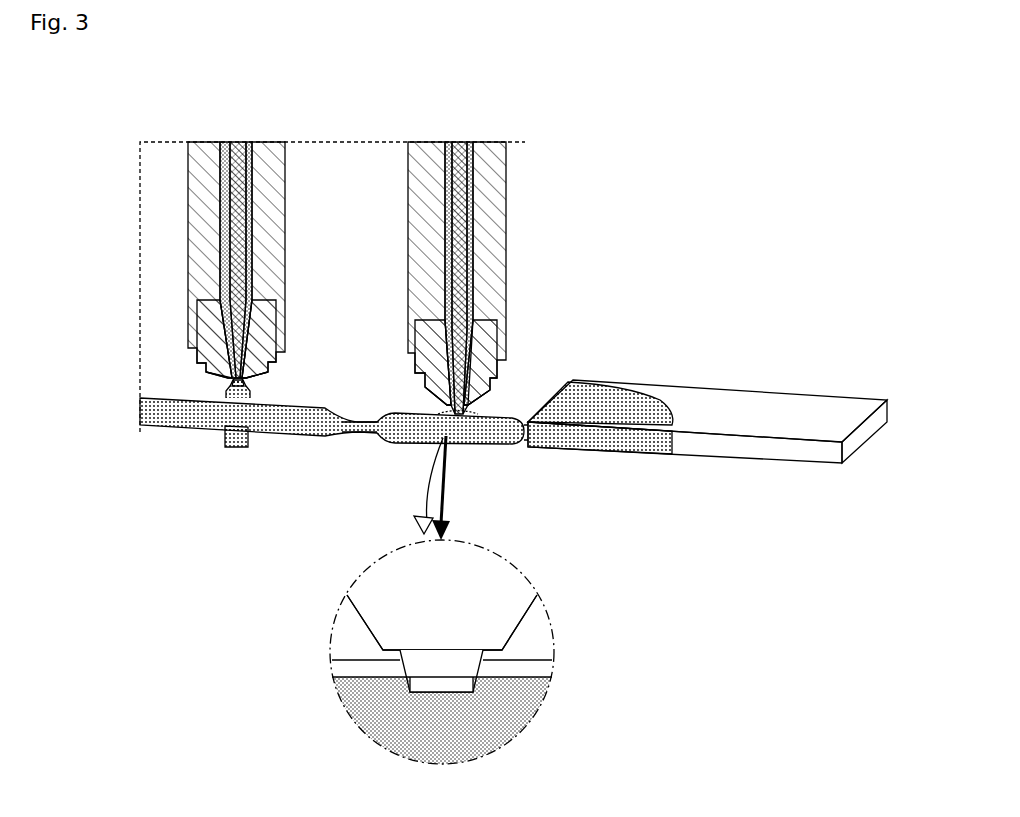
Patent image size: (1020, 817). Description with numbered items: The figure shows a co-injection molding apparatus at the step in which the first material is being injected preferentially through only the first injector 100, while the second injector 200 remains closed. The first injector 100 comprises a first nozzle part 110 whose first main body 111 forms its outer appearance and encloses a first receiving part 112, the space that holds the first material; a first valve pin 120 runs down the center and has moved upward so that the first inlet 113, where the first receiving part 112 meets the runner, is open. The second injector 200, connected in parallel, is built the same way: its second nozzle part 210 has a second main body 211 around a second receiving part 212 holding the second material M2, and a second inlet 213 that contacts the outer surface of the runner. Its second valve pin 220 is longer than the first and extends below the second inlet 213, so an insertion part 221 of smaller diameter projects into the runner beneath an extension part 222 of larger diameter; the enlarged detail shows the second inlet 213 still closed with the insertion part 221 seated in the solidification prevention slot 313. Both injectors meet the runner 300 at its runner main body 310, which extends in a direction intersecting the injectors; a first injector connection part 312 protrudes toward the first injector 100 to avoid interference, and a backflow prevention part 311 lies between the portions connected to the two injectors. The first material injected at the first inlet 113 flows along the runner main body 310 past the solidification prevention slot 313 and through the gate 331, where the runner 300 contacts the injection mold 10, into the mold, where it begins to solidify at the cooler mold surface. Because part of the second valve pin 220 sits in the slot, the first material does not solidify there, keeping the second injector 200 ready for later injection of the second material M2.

The first injector 100 is at (203, 143).
The second injector 200 is at (425, 143).
The first nozzle part 110 is at (88, 247).
The first main body 111 is at (194, 257).
The first receiving part 112 is at (208, 297).
The first inlet 113 is at (224, 388).
The first valve pin 120 is at (232, 223).
The second material M2 is at (468, 192).
The second nozzle part 210 is at (610, 248).
The second main body 211 is at (503, 258).
The second receiving part 212 is at (478, 295).
The second inlet 213 is at (483, 413).
The second valve pin 220 is at (462, 222).
The insertion part 221 is at (454, 667).
The extension part 222 is at (470, 640).
The injection mold 10 is at (806, 380).
The runner 300 is at (280, 440).
The runner main body 310 is at (216, 422).
The backflow prevention part 311 is at (360, 433).
The first injector connection part 312 is at (250, 396).
The solidification prevention slot 313 is at (386, 678).
The gate 331 is at (525, 442).